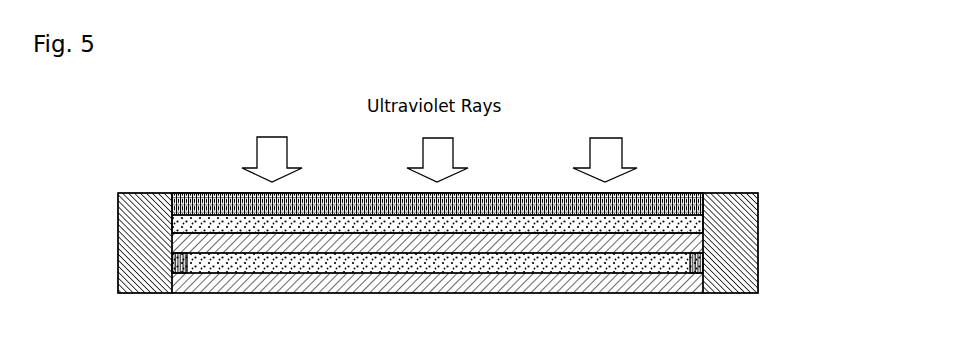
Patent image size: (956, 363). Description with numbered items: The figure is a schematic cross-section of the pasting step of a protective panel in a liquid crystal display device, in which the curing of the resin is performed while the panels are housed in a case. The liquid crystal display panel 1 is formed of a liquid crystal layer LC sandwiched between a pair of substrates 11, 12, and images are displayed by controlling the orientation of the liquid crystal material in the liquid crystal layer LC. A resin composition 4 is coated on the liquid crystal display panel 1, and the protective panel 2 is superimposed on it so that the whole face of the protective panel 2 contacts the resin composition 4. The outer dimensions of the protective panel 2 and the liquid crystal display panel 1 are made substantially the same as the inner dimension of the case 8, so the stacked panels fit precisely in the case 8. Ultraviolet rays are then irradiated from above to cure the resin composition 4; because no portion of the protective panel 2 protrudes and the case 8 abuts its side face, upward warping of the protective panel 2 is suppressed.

The liquid crystal display panel 1 is at (374, 287).
The protective panel 2 is at (505, 193).
The resin composition 4 is at (345, 193).
The case 8 is at (750, 213).
The substrate 11 is at (172, 246).
The substrate 12 is at (172, 291).
The liquid crystal layer LC is at (355, 258).